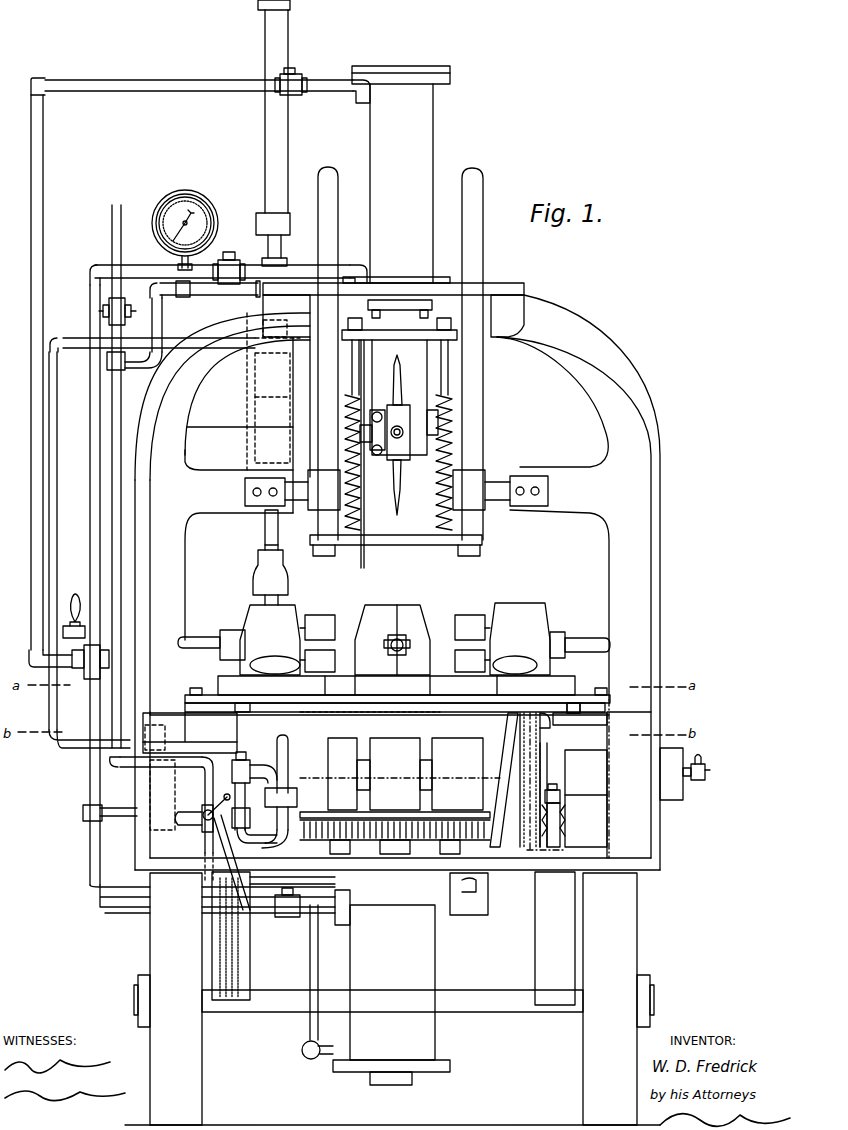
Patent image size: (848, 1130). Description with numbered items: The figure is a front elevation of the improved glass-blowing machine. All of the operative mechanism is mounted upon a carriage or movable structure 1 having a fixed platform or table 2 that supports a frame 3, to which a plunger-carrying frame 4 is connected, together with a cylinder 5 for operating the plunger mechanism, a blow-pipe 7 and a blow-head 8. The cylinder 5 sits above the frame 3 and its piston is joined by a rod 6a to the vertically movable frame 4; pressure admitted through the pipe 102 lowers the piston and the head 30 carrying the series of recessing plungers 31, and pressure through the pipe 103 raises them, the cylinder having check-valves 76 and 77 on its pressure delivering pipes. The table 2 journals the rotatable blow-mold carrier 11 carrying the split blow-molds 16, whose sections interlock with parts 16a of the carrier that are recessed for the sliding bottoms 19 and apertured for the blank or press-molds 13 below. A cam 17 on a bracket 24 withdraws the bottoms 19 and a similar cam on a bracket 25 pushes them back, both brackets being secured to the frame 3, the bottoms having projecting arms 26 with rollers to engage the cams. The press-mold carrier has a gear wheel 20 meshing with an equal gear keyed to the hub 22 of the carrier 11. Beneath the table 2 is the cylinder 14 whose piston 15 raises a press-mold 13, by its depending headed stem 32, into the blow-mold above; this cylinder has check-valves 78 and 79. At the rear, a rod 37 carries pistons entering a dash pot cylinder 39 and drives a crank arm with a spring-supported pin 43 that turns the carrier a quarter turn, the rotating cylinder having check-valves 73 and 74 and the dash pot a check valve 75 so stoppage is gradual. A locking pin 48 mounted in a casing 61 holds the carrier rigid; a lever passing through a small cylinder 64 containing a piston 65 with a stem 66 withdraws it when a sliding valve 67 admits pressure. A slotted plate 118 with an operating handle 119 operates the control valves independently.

The carriage or movable structure 1 is at (392, 998).
The fixed platform or table 2 is at (188, 866).
The frame 3 is at (397, 582).
The plunger-carrying frame 4 is at (399, 407).
The cylinder 5 is at (396, 174).
The rod 6a is at (400, 314).
The blow-pipe 7 is at (271, 527).
The blow-head 8 is at (270, 575).
The rotatable blow-mold carrier 11 is at (568, 700).
The blank or press-molds 13 is at (400, 774).
The cylinder 14 is at (391, 995).
The piston 15 is at (370, 717).
The blow-molds 16 is at (395, 639).
The parts of the carrier 16a is at (218, 690).
The cam 17 is at (486, 732).
The bottoms of the blow-molds 19 is at (425, 670).
The gear wheel 20 is at (393, 854).
The hub 22 is at (430, 738).
The bracket 24 is at (580, 775).
The bracket 25 is at (190, 771).
The projecting arms 26 is at (397, 712).
The head 30 is at (390, 432).
The recessing plungers 31 is at (397, 358).
The depending headed stems 32 is at (395, 854).
The rod 37 is at (512, 781).
The open ended cup or cylinder 39 is at (671, 774).
The pin 43 is at (286, 787).
The locking pin 48 is at (538, 731).
The casing 61 is at (540, 748).
The small cylinder 64 is at (560, 818).
The piston 65 is at (504, 780).
The stem 66 is at (546, 857).
The sliding valve 67 is at (553, 787).
The check-valve 73 is at (194, 808).
The check-valve 74 is at (240, 831).
The check valve 75 is at (696, 775).
The check-valve 76 is at (283, 97).
The check-valve 77 is at (226, 266).
The check-valve 78 is at (306, 982).
The check-valve 79 is at (286, 918).
The pipe 102 is at (200, 133).
The pipe 103 is at (228, 277).
The plate 118 is at (88, 659).
The operating handle 119 is at (72, 590).